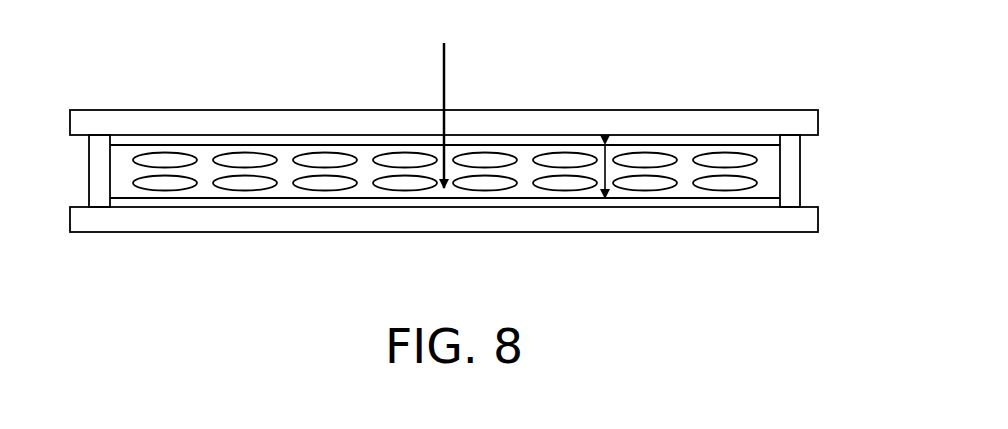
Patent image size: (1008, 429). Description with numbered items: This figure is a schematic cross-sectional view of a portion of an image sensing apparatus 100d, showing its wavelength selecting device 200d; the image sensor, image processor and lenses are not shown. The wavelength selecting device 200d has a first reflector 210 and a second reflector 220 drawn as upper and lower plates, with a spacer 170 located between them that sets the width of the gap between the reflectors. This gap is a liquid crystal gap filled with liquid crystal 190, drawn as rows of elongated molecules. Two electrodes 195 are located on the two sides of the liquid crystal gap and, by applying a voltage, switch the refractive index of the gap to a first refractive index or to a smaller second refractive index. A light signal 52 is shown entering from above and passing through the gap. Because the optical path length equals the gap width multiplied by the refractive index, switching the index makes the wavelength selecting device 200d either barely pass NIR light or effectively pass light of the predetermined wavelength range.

The wavelength selecting device 200d is at (133, 88).
The image sensing apparatus 100d is at (818, 298).
The first reflector 210 is at (807, 127).
The second reflector 220 is at (807, 223).
The spacer 170 is at (793, 173).
The electrodes 195 is at (363, 140).
The liquid crystal 190 is at (725, 158).
The light signal 52 is at (447, 62).